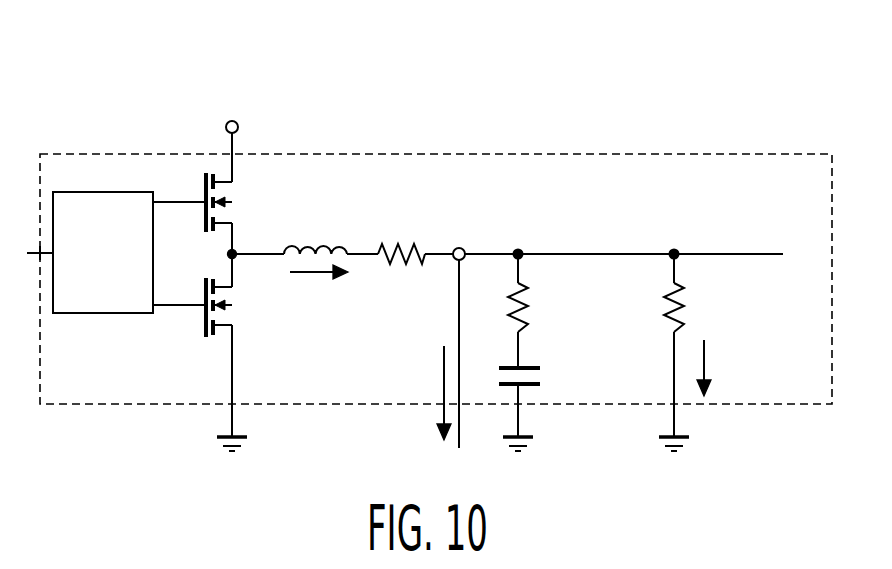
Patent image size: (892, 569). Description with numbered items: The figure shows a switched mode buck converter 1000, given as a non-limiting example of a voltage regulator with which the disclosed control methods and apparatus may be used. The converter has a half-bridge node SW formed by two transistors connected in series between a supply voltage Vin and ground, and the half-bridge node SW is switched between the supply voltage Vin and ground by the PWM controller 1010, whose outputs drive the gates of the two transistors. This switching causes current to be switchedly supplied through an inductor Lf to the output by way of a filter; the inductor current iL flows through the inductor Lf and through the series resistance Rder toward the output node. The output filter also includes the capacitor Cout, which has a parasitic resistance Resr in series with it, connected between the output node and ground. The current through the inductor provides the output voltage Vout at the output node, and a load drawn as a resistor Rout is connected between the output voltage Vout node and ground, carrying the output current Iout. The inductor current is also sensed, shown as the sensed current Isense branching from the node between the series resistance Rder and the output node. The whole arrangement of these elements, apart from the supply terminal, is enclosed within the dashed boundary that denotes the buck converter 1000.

The buck converter 1000 is at (122, 94).
The PWM controller 1010 is at (90, 252).
The supply voltage Vin is at (249, 139).
The half-bridge node SW is at (236, 255).
The inductor Lf is at (331, 233).
The inductor current iL is at (319, 289).
The derivative sensing resistor Rder is at (415, 237).
The sensed current Isense is at (416, 354).
The parasitic resistance of the capacitor Resr is at (545, 313).
The capacitor Cout is at (547, 405).
The output voltage Vout is at (674, 236).
The output load resistor Rout is at (699, 354).
The output current Iout is at (724, 368).